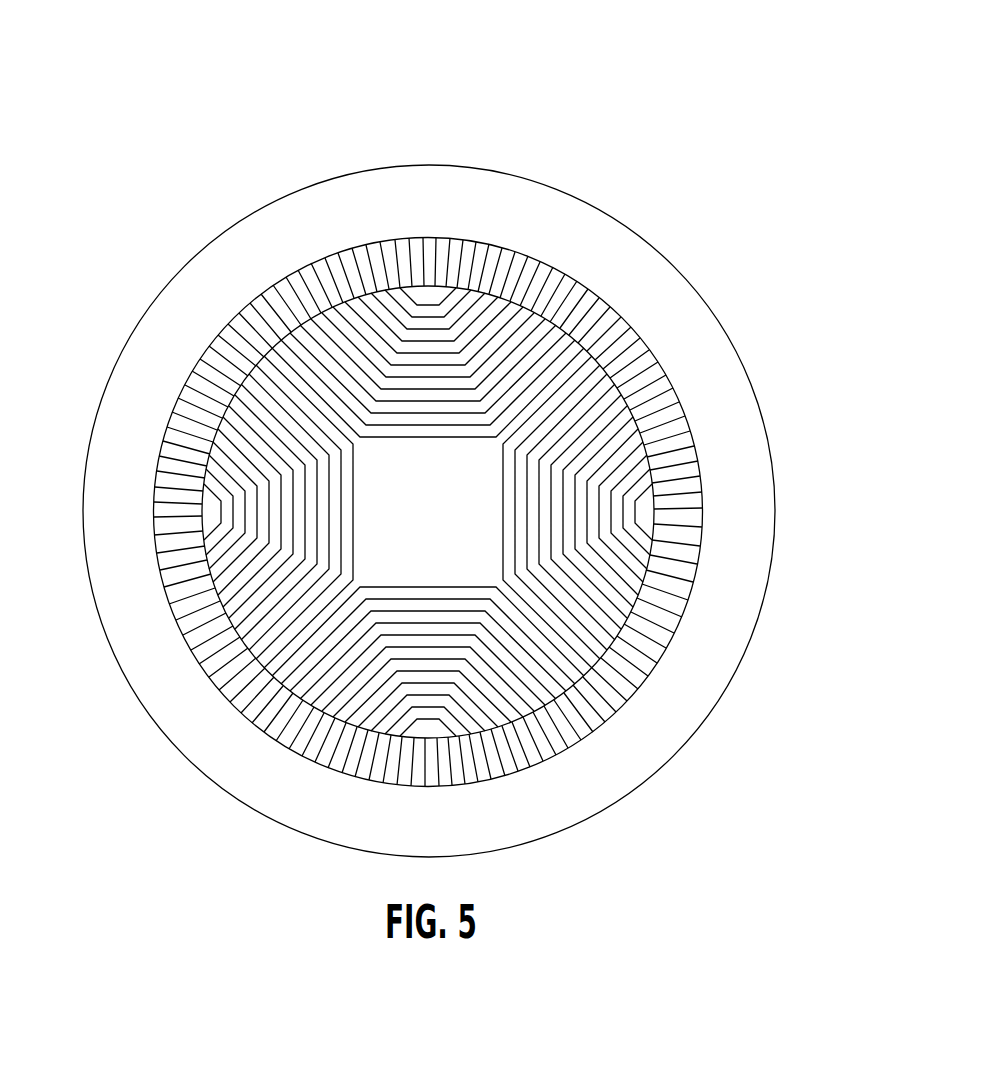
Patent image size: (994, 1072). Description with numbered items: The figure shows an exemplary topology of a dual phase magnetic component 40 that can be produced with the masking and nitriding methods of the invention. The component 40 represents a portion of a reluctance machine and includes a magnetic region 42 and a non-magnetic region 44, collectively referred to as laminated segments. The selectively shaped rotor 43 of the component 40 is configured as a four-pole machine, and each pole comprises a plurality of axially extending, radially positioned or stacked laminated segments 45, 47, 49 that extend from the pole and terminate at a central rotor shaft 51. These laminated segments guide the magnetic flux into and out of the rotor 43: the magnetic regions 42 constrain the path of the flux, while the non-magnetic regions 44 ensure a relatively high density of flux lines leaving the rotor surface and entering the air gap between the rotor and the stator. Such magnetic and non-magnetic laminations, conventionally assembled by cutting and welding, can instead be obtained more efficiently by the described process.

The component 40 is at (735, 103).
The magnetic region 42 is at (636, 510).
The rotor 43 is at (632, 356).
The non-magnetic region 44 is at (588, 672).
The laminated segment 45 is at (215, 555).
The laminated segment 47 is at (240, 585).
The laminated segment 49 is at (250, 620).
The central rotor shaft 51 is at (440, 521).